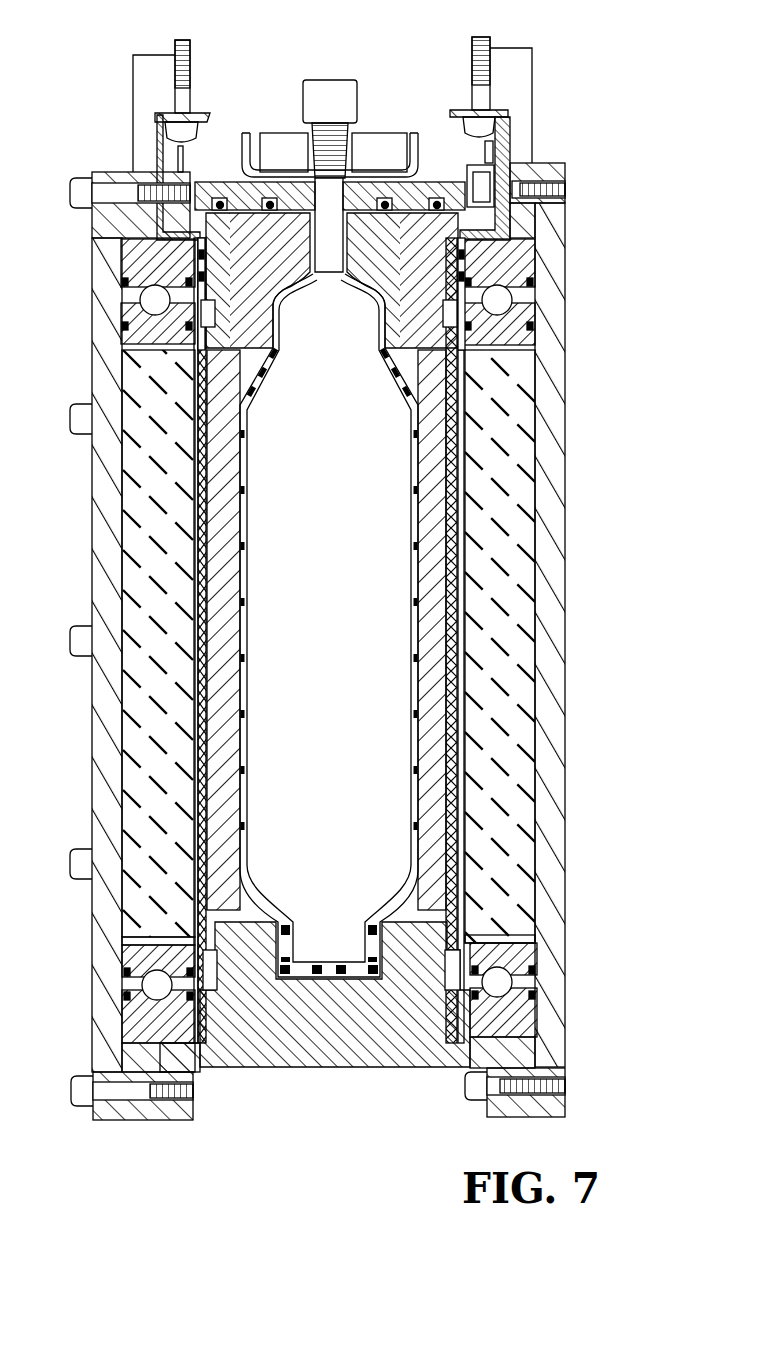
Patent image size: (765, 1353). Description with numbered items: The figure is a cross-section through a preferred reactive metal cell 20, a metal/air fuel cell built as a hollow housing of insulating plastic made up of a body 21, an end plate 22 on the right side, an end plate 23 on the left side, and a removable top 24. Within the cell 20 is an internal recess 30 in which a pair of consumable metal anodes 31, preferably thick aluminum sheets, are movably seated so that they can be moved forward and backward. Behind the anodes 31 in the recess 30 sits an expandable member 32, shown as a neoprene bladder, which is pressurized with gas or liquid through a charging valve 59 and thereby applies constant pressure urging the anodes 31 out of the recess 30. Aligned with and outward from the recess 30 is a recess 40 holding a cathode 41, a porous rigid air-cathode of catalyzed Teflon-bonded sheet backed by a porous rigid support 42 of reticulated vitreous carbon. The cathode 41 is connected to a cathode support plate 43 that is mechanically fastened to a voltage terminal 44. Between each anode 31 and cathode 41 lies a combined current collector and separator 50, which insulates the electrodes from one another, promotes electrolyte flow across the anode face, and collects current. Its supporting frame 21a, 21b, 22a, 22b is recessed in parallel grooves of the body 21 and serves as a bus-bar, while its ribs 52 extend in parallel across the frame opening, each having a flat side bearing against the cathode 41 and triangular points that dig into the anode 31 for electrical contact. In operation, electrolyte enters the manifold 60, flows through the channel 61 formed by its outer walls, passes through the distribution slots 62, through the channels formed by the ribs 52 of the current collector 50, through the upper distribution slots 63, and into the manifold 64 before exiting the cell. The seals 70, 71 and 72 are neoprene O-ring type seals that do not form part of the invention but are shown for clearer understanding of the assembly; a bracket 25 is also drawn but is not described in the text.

The reactive metal cell 20 is at (335, 584).
The body 21 is at (333, 1068).
The supporting frame 21a is at (440, 995).
The supporting frame 21b is at (227, 988).
The end plate (right side) 22 is at (555, 1118).
The supporting frame 22a is at (398, 350).
The supporting frame 22b is at (233, 350).
The end plate (left side) 23 is at (133, 1121).
The removable top 24 is at (430, 175).
The U-shaped bracket 25 is at (255, 135).
The internal recess 30 is at (410, 392).
The consumable metal anode 31 is at (437, 662).
The expandable member 32 is at (250, 762).
The recess 40 is at (540, 343).
The cathode 41 is at (468, 620).
The porous rigid support 42 is at (518, 700).
The cathode support plate 43 is at (157, 118).
The voltage terminal 44 is at (185, 40).
The combined current collector and separator 50 is at (463, 560).
The rib 52 is at (208, 590).
The charging valve 59 is at (340, 80).
The manifold 60 is at (517, 930).
The channel 61 is at (512, 980).
The distribution slot 62 is at (488, 970).
The upper distribution slot 63 is at (538, 294).
The manifold 64 is at (500, 305).
The seal 70 is at (196, 257).
The seal 71 is at (124, 328).
The seal 72 is at (225, 183).